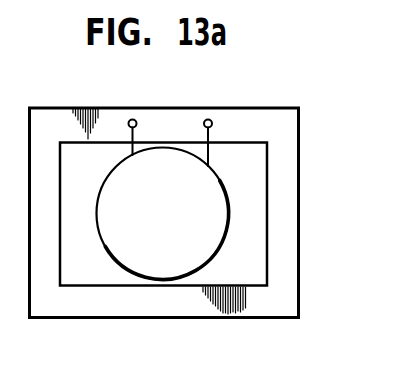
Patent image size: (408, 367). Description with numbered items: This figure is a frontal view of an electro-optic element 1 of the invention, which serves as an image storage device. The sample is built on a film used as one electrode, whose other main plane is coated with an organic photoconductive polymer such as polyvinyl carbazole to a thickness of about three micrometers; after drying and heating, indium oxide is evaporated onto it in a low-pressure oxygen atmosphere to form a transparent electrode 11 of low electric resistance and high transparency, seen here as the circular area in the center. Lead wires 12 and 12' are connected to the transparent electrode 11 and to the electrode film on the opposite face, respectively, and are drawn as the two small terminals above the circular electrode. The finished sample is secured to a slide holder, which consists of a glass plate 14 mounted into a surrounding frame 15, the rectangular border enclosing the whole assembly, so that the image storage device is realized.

The electro-optic element 1 is at (222, 182).
The transparent electrode 11 is at (203, 218).
The lead wire 12 is at (151, 115).
The lead wire 12' is at (232, 120).
The glass plate 14 is at (250, 252).
The frame 15 is at (298, 303).